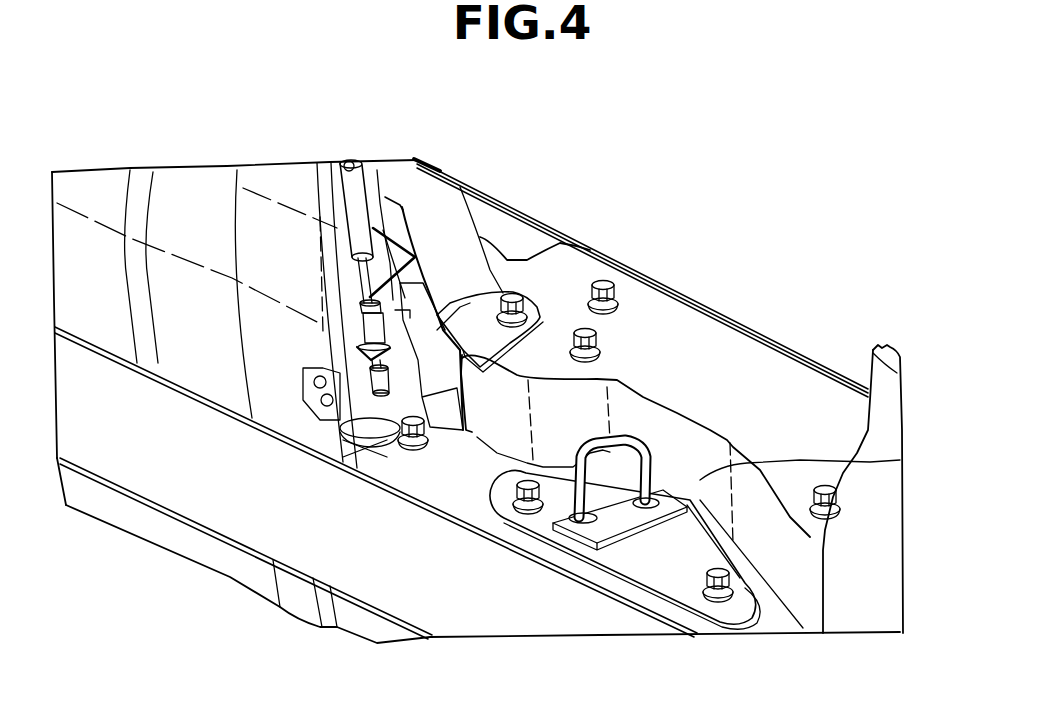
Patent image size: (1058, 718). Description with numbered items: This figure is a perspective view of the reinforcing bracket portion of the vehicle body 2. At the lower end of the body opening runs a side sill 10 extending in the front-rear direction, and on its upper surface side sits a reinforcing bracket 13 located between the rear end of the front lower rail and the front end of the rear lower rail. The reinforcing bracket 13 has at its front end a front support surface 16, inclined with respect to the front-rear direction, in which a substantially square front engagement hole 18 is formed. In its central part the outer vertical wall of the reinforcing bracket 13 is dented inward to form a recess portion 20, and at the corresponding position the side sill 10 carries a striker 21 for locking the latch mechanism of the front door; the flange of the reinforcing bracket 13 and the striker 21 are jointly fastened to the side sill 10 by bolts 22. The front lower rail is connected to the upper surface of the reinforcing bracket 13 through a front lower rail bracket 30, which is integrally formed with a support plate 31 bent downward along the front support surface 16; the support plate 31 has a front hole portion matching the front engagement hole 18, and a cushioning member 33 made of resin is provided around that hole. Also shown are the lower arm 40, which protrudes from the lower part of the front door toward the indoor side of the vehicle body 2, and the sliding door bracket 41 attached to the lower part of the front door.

The vehicle body 2 is at (280, 543).
The side sill 10 is at (666, 597).
The reinforcing bracket 13 is at (643, 327).
The front support surface 16 is at (498, 410).
The front engagement hole 18 is at (467, 305).
The recess portion 20 is at (900, 460).
The striker 21 is at (648, 567).
The bolts 22 is at (512, 500).
The front lower rail bracket 30 is at (408, 183).
The support plate 31 is at (395, 415).
The cushioning member 33 is at (424, 330).
The lower arm 40 is at (377, 170).
The sliding door bracket 41 is at (210, 202).